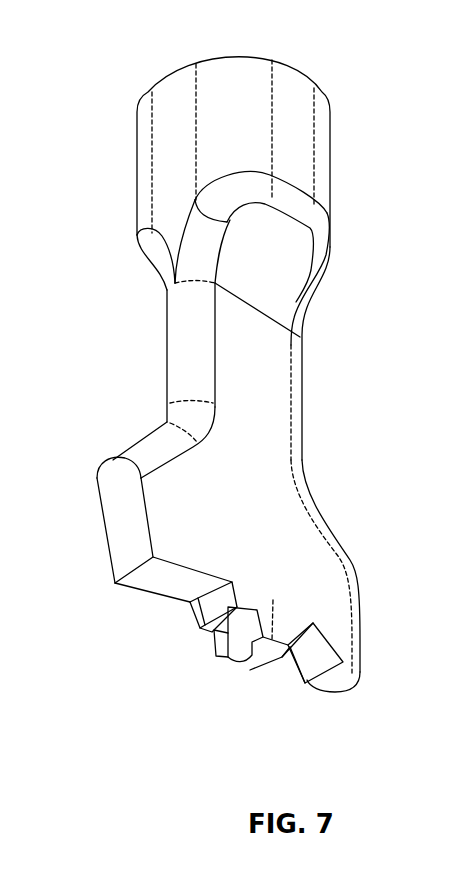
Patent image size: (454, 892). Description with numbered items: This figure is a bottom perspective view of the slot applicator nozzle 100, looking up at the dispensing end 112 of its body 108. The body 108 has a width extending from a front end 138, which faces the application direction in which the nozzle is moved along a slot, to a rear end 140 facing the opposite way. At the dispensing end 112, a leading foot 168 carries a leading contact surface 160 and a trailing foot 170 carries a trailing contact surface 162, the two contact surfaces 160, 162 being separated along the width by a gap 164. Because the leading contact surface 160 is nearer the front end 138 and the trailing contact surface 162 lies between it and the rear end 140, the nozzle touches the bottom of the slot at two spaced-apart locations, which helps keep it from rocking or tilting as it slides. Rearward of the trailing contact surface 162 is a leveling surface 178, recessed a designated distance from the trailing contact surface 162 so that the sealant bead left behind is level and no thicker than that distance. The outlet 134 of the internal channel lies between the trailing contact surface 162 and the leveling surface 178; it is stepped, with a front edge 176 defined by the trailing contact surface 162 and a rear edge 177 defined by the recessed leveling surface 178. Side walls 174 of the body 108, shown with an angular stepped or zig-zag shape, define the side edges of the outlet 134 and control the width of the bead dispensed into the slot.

The applicator nozzle 100 is at (60, 123).
The body 108 is at (280, 368).
The dispensing end 112 is at (262, 737).
The outlet 134 is at (216, 620).
The front end 138 is at (368, 598).
The rear end 140 is at (104, 496).
The leading contact surface 160 is at (338, 678).
The trailing contact surface 162 is at (275, 657).
The gap 164 is at (281, 692).
The leading foot 168 is at (345, 652).
The trailing foot 170 is at (273, 650).
The side walls 174 is at (200, 608).
The front edge 176 is at (248, 656).
The rear edge 177 is at (190, 600).
The leveling surface 178 is at (153, 582).